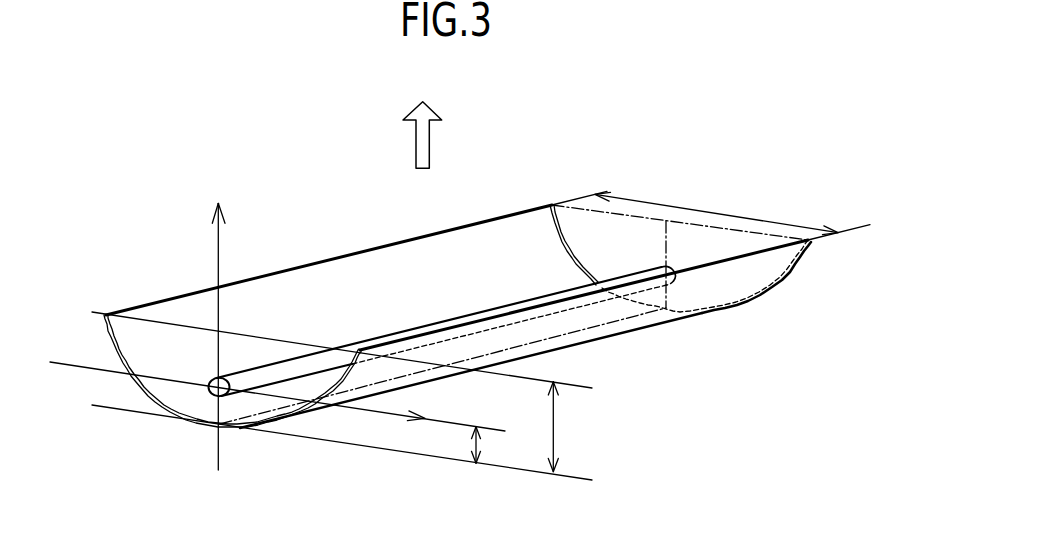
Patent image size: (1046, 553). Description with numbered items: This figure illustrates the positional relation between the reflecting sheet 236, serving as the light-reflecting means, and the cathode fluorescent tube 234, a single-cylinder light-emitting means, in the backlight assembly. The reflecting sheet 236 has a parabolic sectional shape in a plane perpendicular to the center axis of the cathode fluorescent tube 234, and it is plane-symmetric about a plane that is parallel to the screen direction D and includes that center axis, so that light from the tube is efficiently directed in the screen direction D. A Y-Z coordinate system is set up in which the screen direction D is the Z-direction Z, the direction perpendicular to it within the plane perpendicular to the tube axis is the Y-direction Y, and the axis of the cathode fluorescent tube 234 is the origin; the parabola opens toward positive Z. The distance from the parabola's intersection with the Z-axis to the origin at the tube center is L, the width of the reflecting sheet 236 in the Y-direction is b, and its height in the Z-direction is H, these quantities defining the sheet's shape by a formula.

The cathode fluorescent tube 234 is at (267, 372).
The reflecting sheet 236 is at (478, 222).
The screen direction D is at (422, 119).
The Z-direction Z is at (208, 335).
The Y-direction Y is at (277, 405).
The height of the reflecting sheet H is at (560, 427).
The distance between parabola vertex and tube center L is at (486, 445).
The width of the reflecting sheet b is at (711, 212).